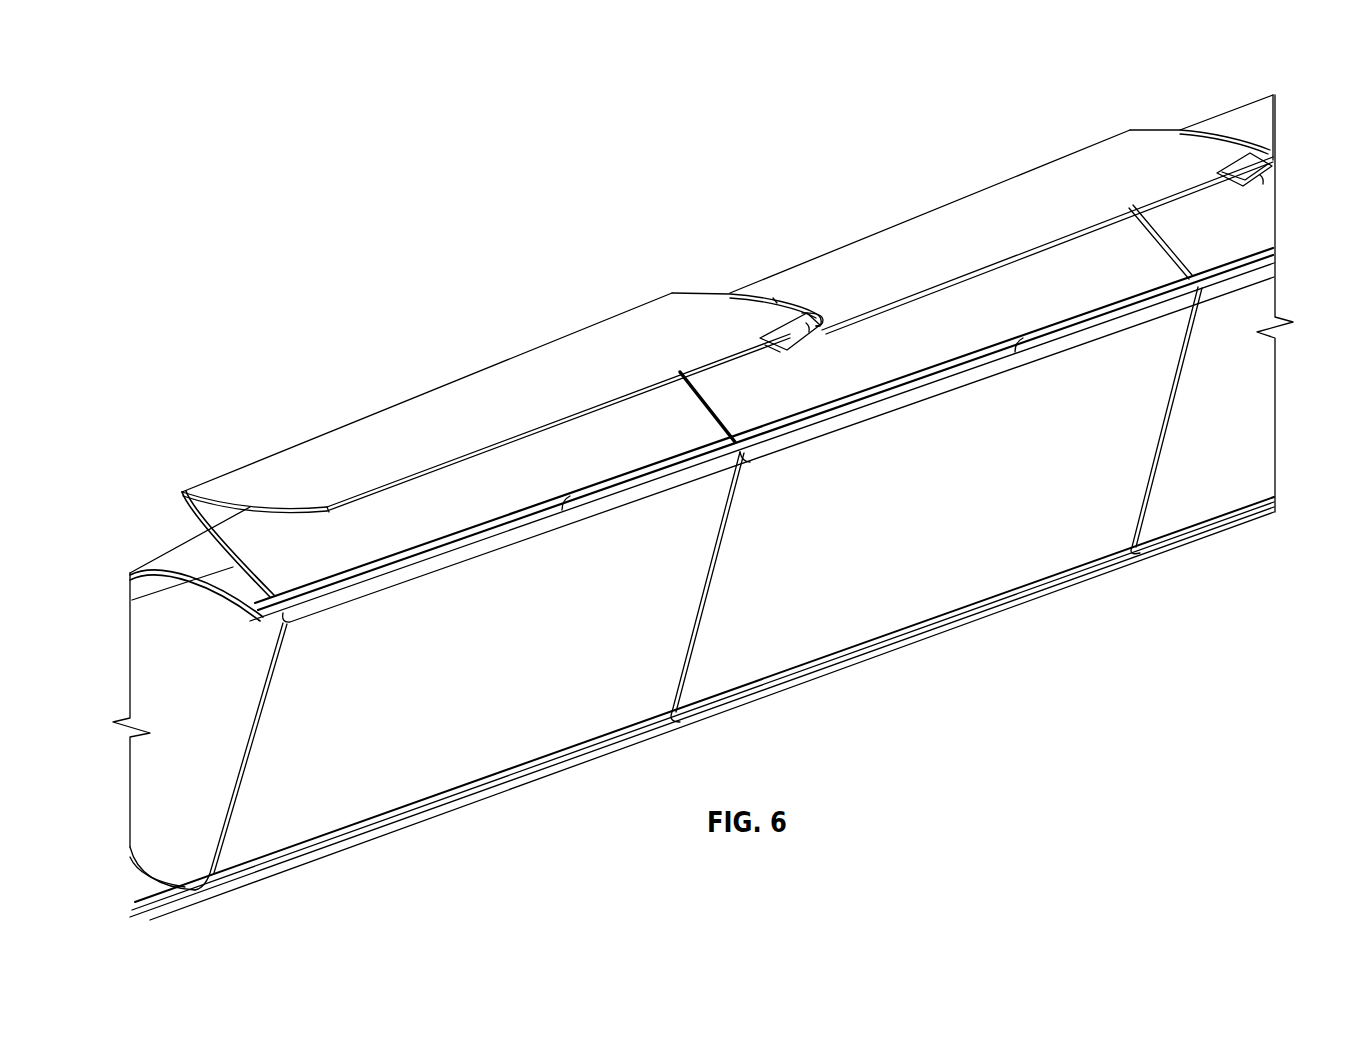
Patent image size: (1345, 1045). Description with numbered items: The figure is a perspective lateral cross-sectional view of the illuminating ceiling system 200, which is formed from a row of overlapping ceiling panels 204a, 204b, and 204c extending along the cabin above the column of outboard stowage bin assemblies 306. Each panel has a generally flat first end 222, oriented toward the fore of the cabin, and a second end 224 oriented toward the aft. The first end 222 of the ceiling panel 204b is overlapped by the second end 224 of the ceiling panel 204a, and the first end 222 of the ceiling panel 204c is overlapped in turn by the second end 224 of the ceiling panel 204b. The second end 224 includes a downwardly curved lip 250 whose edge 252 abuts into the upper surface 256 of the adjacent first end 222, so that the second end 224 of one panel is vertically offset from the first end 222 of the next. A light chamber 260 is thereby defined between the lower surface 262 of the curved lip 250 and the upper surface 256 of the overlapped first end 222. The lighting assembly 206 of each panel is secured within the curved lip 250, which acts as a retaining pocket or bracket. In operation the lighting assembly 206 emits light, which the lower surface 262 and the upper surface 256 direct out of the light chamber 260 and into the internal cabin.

The illuminating ceiling system 200 is at (320, 416).
The ceiling panel 204a is at (458, 386).
The ceiling panel 204b is at (923, 218).
The ceiling panel 204c is at (1227, 120).
The lighting assembly 206 is at (811, 332).
The first end 222 is at (235, 478).
The second end 224 is at (665, 306).
The downwardly curved lip 250 is at (805, 316).
The edge 252 is at (824, 318).
The upper surface 256 is at (323, 492).
The light chamber 260 is at (779, 346).
The lower surface 262 is at (704, 406).
The outboard stowage bin assemblies 306 is at (404, 776).